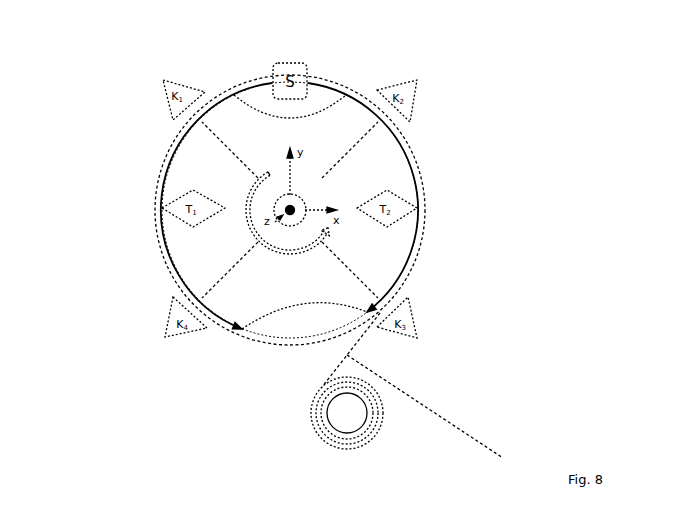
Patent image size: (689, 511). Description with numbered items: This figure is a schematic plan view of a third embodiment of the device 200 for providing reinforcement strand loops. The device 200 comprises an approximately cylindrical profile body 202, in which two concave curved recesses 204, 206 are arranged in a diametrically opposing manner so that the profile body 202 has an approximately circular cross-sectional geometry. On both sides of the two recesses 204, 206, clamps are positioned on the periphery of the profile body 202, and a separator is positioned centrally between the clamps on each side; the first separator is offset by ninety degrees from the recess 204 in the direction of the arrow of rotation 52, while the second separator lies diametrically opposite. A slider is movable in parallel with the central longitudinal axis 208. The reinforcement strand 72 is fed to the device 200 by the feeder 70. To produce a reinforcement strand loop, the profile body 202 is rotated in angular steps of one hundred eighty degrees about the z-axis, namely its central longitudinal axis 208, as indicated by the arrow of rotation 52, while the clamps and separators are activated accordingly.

The device 200 is at (393, 62).
The profile body 202 is at (302, 288).
The recess 204 is at (262, 103).
The recess 206 is at (282, 318).
The central longitudinal axis 208 is at (305, 203).
The arrow of rotation 52 is at (247, 195).
The feeder 70 is at (385, 433).
The reinforcement strand 72 is at (436, 413).